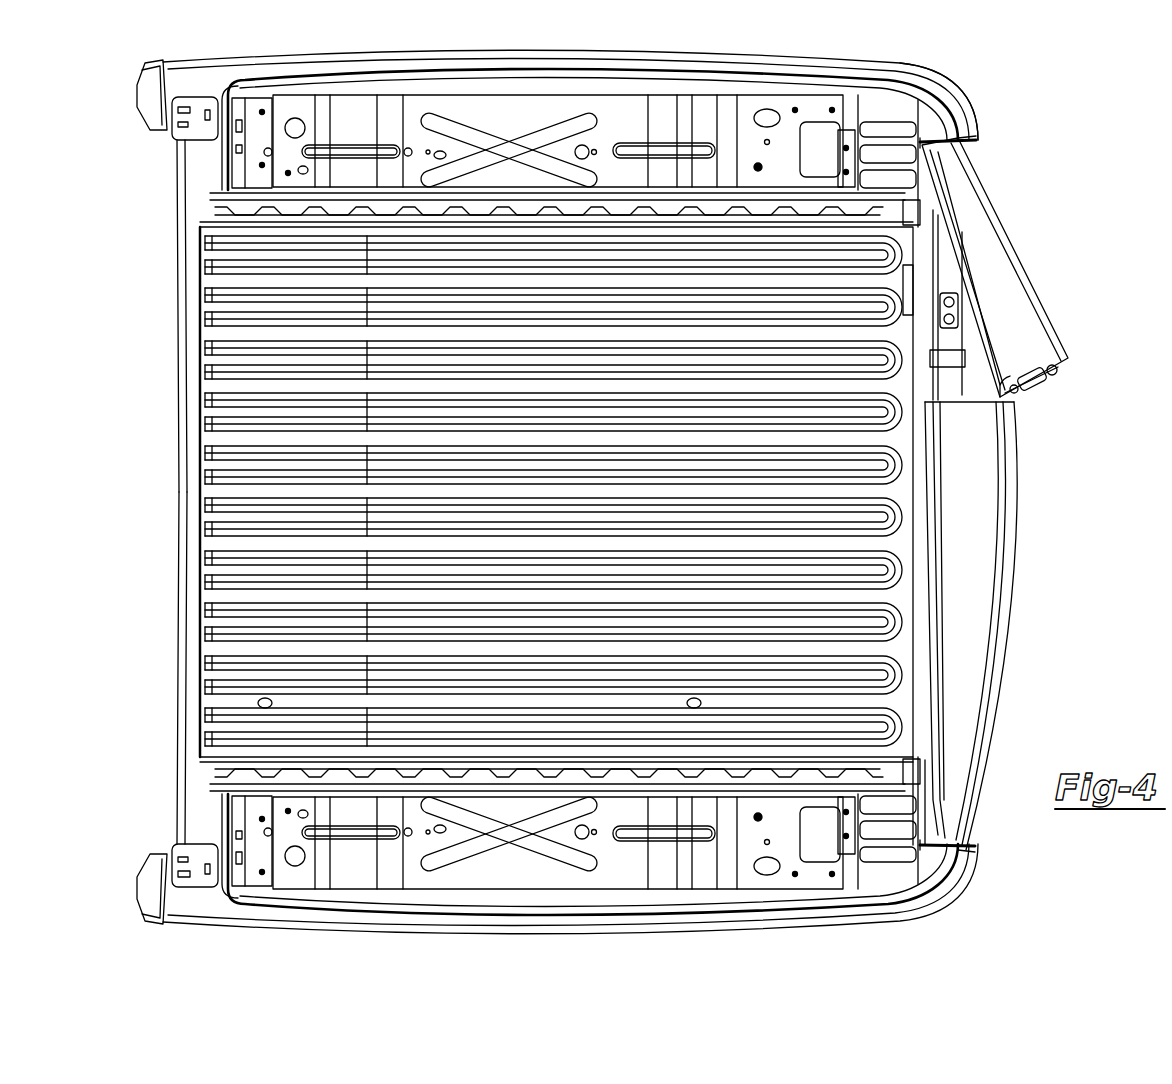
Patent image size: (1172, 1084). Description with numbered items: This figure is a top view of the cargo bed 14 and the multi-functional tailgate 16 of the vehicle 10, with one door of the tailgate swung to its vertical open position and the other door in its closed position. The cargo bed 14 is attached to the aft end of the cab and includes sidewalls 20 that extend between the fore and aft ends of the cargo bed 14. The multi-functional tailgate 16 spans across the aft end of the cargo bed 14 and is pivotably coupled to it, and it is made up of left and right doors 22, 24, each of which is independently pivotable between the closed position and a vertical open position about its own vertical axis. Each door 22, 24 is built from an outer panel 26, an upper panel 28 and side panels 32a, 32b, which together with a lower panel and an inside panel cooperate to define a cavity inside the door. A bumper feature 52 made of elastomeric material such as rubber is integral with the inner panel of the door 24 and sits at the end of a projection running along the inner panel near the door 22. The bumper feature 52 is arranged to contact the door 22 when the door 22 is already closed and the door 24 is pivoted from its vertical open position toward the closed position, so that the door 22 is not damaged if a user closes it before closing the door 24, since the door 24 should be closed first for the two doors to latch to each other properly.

The vehicle 10 is at (1072, 84).
The cargo bed 14 is at (926, 75).
The multi-functional tailgate 16 is at (1011, 626).
The sidewalls 20 is at (892, 128).
The left door 22 is at (1004, 683).
The right door 24 is at (1043, 491).
The outer panel 26 is at (1013, 230).
The upper panel 28 is at (1006, 309).
The side panel 32a is at (957, 143).
The side panel 32b is at (1054, 367).
The bumper feature 52 is at (982, 392).